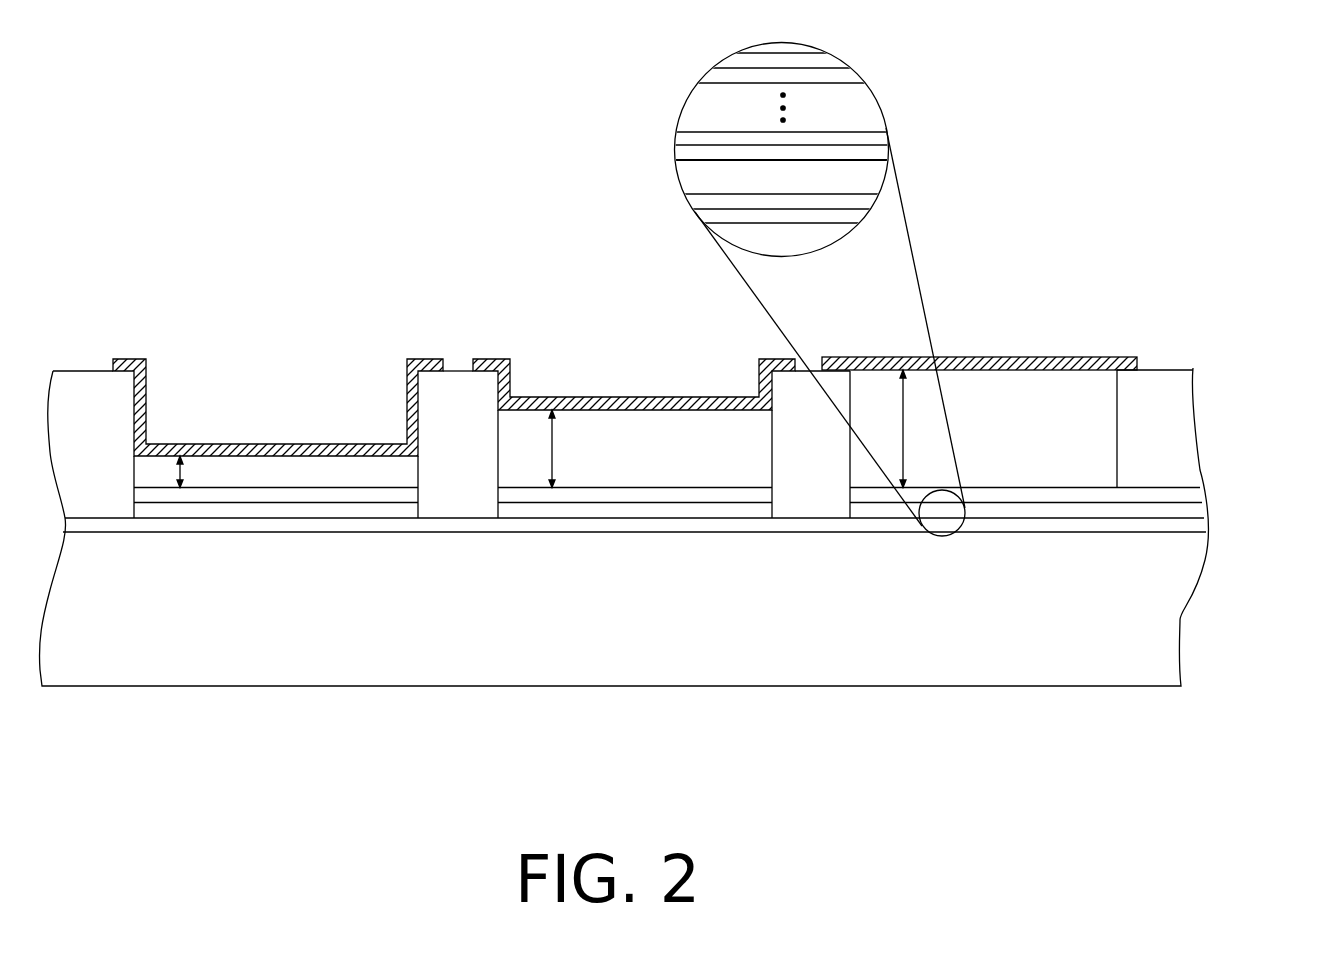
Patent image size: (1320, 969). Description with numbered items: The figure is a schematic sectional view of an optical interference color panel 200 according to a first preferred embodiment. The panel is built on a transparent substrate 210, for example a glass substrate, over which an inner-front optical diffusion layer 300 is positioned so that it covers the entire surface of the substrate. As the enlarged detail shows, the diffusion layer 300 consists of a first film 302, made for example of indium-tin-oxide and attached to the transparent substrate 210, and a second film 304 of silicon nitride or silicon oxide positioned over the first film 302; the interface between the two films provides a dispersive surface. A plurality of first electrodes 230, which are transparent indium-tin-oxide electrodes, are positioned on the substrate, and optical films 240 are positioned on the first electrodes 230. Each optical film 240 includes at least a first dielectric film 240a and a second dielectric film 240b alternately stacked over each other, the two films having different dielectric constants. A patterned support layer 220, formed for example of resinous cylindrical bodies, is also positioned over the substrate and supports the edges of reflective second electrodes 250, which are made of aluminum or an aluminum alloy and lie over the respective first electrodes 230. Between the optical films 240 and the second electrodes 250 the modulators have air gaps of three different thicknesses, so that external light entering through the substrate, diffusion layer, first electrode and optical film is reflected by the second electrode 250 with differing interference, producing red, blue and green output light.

The optical interference color panel 200 is at (1186, 771).
The transparent substrate 210 is at (1163, 610).
The patterned support layer 220 is at (1178, 413).
The first electrodes 230 is at (1112, 510).
The optical films 240 is at (1113, 485).
The first dielectric film 240a is at (830, 62).
The second dielectric film 240b is at (850, 77).
The second electrodes 250 is at (1100, 357).
The inner-front optical diffusion layer 300 is at (1198, 523).
The first film 302 is at (868, 217).
The second film 304 is at (867, 200).